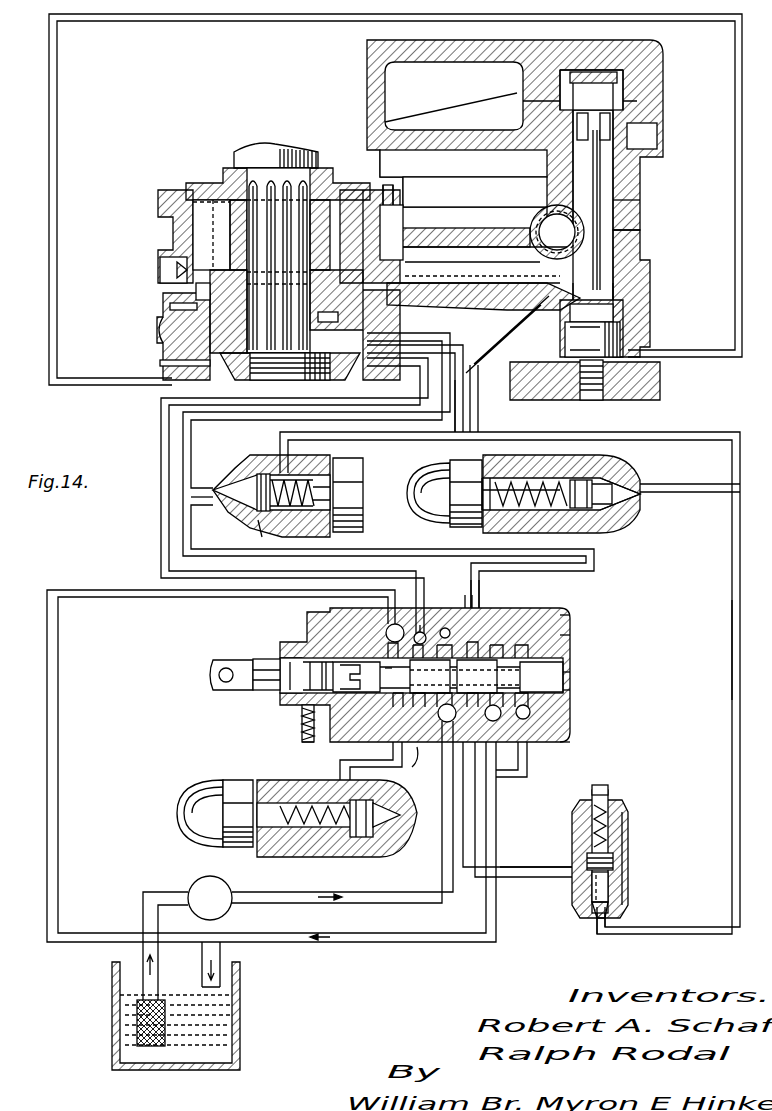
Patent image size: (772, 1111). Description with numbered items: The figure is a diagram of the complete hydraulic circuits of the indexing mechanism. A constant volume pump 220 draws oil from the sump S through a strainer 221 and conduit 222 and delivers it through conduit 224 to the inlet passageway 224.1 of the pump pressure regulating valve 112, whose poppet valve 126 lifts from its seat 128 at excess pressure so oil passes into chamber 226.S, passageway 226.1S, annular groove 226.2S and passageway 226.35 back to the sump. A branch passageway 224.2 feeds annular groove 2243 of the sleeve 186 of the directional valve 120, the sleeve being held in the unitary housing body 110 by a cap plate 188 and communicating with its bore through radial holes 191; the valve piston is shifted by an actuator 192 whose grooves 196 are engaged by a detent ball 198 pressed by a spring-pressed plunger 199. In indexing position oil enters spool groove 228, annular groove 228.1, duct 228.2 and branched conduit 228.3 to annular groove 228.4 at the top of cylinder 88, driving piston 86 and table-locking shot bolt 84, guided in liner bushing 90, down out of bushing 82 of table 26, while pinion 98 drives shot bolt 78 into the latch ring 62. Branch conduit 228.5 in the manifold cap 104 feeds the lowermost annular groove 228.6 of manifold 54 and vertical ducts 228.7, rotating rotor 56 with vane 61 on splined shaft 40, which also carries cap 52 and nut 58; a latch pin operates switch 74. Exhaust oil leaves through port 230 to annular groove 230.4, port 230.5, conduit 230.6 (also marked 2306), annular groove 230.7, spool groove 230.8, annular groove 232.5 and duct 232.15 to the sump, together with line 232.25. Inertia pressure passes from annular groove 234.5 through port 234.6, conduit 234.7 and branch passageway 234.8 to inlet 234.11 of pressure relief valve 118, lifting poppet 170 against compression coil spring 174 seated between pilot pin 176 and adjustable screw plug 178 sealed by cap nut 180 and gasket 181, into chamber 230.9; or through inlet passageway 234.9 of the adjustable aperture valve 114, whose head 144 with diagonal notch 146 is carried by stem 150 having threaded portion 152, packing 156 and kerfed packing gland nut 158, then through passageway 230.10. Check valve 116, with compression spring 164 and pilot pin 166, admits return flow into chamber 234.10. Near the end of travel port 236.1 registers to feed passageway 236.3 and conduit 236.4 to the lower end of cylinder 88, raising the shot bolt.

The table 26 is at (660, 62).
The bushing 82 is at (624, 92).
The table-locking shot bolt 84 is at (643, 184).
The liner bushing 90 is at (621, 204).
The pinion 98 is at (530, 215).
The shot bolt 78 is at (430, 228).
The port 236.1 is at (396, 206).
The port 230.5 is at (483, 265).
The port 234.6 is at (482, 271).
The annular groove 228.4 is at (624, 296).
The cylinder 88 is at (624, 318).
The piston 86 is at (622, 338).
The conduit 230.6 is at (482, 352).
The splined shaft 40 is at (256, 150).
The cap 52 is at (200, 182).
The rotor 56 is at (200, 205).
The vane 61 is at (193, 205).
The latch ring 62 is at (158, 233).
The switch 74 is at (160, 263).
The port 230 is at (335, 182).
The manifold 54 is at (163, 300).
The passageway 236.3 is at (170, 306).
The manifold cap 104 is at (158, 330).
The vertical ducts 228.7 is at (160, 363).
The annular groove 234.5 is at (223, 308).
The annular groove 230.4 is at (337, 331).
The nut 58 is at (222, 380).
The annular groove 228.6 is at (325, 380).
The branch conduit 228.5 is at (420, 398).
The conduit 236.4 is at (76, 385).
The branched conduit 228.3 is at (161, 537).
The branch passageway 234.8 is at (636, 440).
The conduit 234.7 is at (468, 395).
The annular groove 232.5 is at (637, 642).
The annular groove 230.7 is at (500, 620).
The duct 228.2 is at (424, 592).
The annular groove 228.1 is at (426, 618).
The conduit 2306 is at (489, 594).
The check valve 116 is at (240, 470).
The compression spring 164 is at (333, 452).
The pilot pin 166 is at (330, 535).
The chamber 234.10 is at (262, 537).
The pressure relief valve 118 is at (462, 461).
The cap nut 180 is at (445, 525).
The gasket 181 is at (482, 515).
The pilot pin 176 is at (500, 520).
The adjustable screw plug 178 is at (520, 478).
The compression coil spring 174 is at (566, 478).
The chamber 230.9 is at (590, 510).
The poppet 170 is at (610, 520).
The inlet 234.11 is at (645, 492).
The directional valve 120 is at (587, 667).
The sleeve 186 is at (572, 617).
The cap plate 188 is at (574, 640).
The spool groove 230.8 is at (572, 678).
The radial holes 191 is at (572, 690).
The housing body 110 is at (555, 750).
The actuator 192 is at (255, 659).
The grooves 196 is at (292, 674).
The detent ball 198 is at (302, 710).
The spring-pressed plunger 199 is at (300, 733).
The passageway 226.35 is at (370, 631).
The annular groove 2243 is at (448, 627).
The spool groove 228 is at (397, 662).
The passageway 224.2 is at (430, 721).
The annular groove 226.2S is at (370, 761).
The passageway 226.1S is at (404, 766).
The inlet passageway 224.1 is at (432, 803).
The chamber 226.S is at (330, 855).
The conduit 232.25 is at (470, 942).
The conduit 224 is at (372, 903).
The duct 232.15 is at (483, 775).
The passageway 230.10 is at (545, 851).
The pump pressure regulating valve 112 is at (201, 784).
The poppet valve 126 is at (385, 815).
The seat 128 is at (398, 830).
The adjustable aperture valve 114 is at (640, 864).
The kerfed packing gland nut 158 is at (612, 795).
The stem 150 is at (630, 813).
The packing 156 is at (592, 830).
The threaded portion 152 is at (620, 856).
The head 144 is at (612, 879).
The inlet passageway 234.9 is at (610, 926).
The diagonal notch 146 is at (577, 912).
The constant volume pump 220 is at (190, 882).
The conduit 222 is at (140, 900).
The sump S is at (240, 985).
The strainer 221 is at (137, 1016).